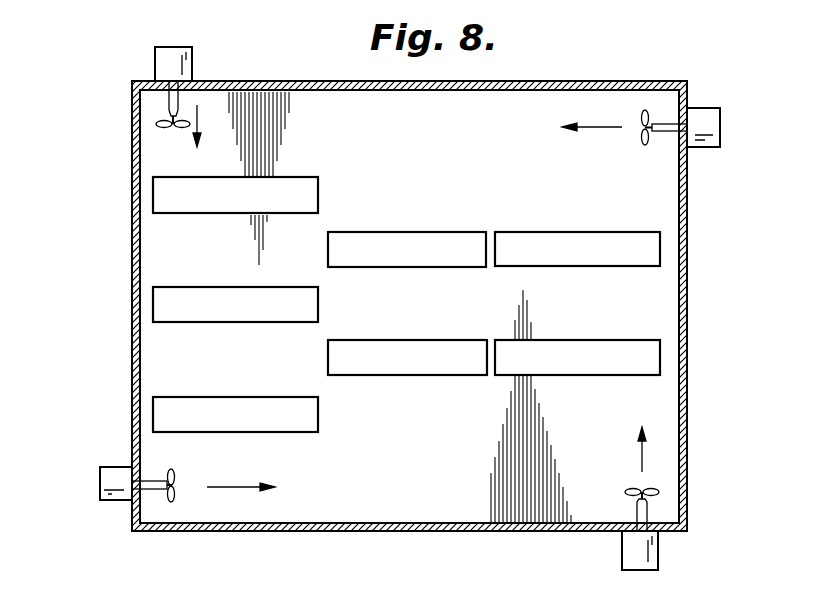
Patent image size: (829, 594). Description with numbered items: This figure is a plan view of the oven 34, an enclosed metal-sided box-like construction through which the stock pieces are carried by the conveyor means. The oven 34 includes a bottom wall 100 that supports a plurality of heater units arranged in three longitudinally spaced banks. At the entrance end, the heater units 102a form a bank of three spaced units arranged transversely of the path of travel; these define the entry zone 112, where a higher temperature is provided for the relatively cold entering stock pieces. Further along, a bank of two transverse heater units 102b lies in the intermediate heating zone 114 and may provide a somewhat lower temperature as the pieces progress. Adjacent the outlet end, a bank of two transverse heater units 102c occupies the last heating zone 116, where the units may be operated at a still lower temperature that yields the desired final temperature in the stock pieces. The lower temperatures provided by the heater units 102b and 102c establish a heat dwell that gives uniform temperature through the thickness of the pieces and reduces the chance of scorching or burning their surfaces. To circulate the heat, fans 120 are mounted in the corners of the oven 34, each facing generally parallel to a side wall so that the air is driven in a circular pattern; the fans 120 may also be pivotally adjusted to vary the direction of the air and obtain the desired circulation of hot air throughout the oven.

The oven 34 is at (574, 79).
The bottom wall 100 is at (431, 487).
The fans 120 is at (168, 132).
The heater units 102a is at (170, 200).
The heater units 102b is at (405, 232).
The heater units 102c is at (642, 248).
The entry zone 112 is at (235, 310).
The intermediate heating zone 114 is at (405, 445).
The last heating zone 116 is at (575, 445).